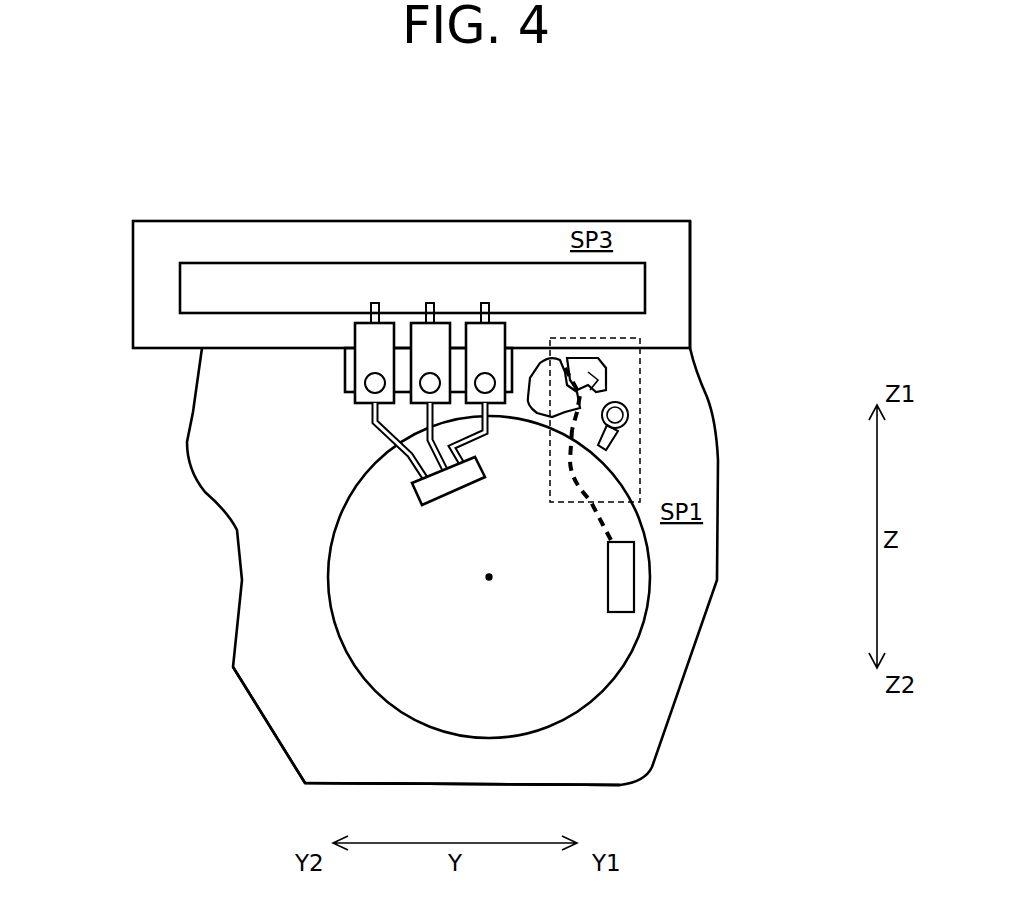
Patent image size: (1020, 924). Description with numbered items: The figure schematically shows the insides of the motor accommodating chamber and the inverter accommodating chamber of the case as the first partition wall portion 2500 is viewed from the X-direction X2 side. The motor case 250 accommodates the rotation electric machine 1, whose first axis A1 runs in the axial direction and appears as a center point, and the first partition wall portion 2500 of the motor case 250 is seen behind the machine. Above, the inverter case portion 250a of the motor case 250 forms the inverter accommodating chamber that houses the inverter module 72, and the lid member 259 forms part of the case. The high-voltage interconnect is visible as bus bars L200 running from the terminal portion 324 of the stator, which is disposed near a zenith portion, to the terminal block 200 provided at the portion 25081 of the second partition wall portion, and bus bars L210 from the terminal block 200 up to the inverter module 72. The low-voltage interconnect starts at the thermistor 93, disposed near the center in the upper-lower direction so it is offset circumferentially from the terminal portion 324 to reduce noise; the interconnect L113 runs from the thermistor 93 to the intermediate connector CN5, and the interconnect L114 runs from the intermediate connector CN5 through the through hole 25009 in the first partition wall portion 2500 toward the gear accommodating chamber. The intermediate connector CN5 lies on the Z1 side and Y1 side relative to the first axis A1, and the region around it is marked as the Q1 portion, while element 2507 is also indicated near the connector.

The rotation electric machine 1 is at (567, 673).
The inverter module 72 is at (180, 275).
The thermistor 93 is at (635, 597).
The terminal block 200 is at (530, 348).
The motor case 250 is at (720, 538).
The inverter case portion 250a is at (693, 230).
The lid member 259 is at (219, 221).
The terminal portion 324 is at (413, 488).
The first partition wall portion 2500 is at (675, 580).
The bracket 2507 is at (638, 382).
The through hole 25009 is at (600, 362).
The portion of the second partition wall portion 25081 is at (297, 348).
The first axis A1 is at (489, 577).
The intermediate connector CN5 is at (628, 415).
The interconnect L113 is at (578, 466).
The interconnect L114 is at (565, 355).
The bus bar L200 is at (450, 442).
The bus bar L210 is at (485, 303).
The Q1 portion Q1 is at (640, 338).